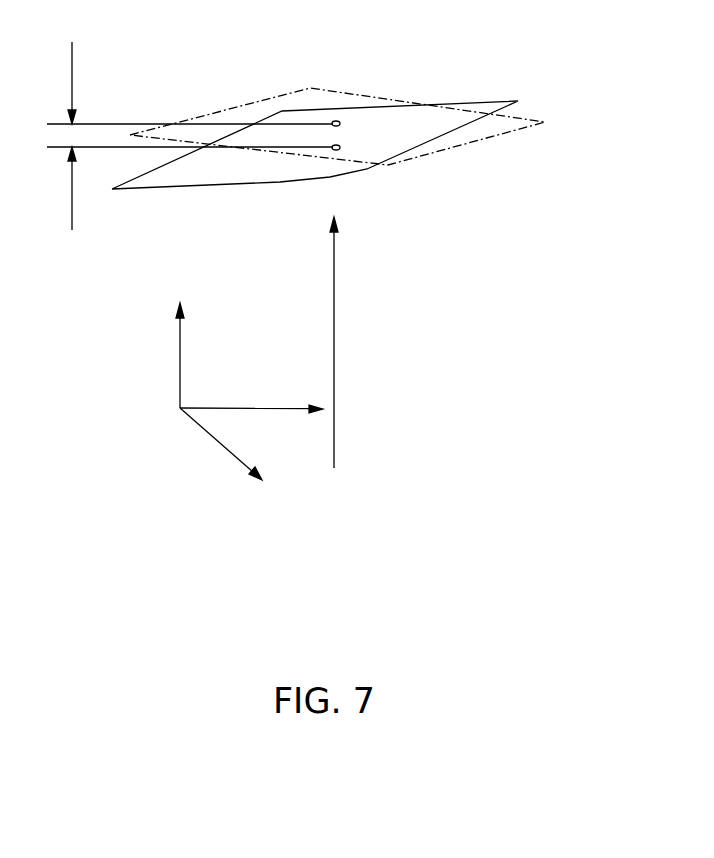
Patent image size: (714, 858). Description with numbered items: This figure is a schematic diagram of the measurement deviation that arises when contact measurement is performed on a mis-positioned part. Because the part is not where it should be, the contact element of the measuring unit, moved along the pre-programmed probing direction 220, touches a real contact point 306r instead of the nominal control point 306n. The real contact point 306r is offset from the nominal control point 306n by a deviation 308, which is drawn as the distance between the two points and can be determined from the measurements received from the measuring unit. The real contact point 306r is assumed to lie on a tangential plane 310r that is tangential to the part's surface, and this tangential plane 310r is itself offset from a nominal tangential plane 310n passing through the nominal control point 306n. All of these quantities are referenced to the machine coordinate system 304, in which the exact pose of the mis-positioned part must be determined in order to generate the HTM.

The probing direction 220 is at (335, 378).
The machine coordinate system 304 is at (180, 409).
The nominal control point 306n is at (336, 120).
The real contact point 306r is at (337, 151).
The deviation 308 is at (73, 121).
The nominal tangential plane 310n is at (523, 128).
The tangential plane 310r is at (470, 123).